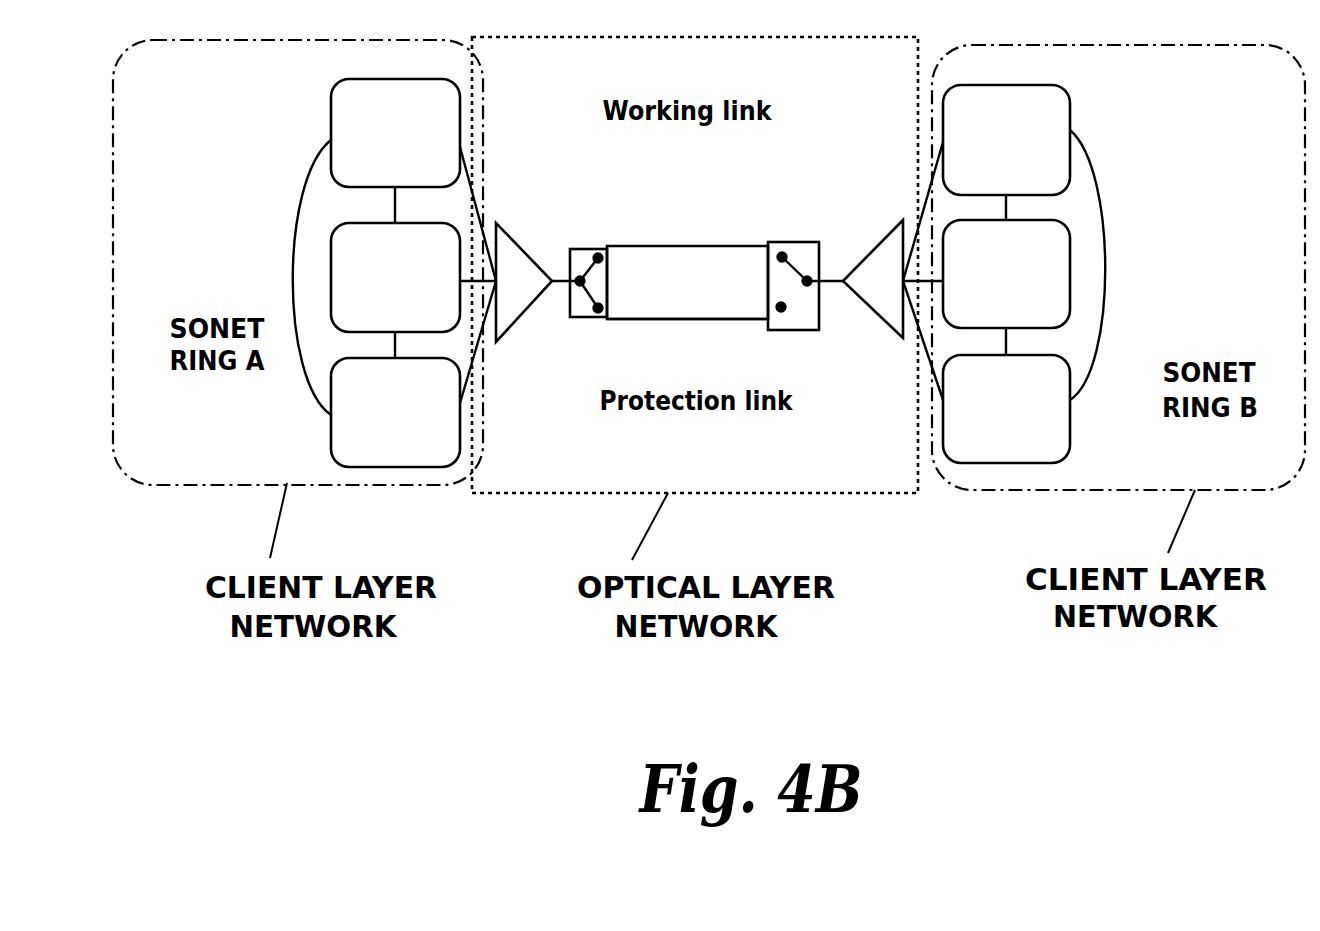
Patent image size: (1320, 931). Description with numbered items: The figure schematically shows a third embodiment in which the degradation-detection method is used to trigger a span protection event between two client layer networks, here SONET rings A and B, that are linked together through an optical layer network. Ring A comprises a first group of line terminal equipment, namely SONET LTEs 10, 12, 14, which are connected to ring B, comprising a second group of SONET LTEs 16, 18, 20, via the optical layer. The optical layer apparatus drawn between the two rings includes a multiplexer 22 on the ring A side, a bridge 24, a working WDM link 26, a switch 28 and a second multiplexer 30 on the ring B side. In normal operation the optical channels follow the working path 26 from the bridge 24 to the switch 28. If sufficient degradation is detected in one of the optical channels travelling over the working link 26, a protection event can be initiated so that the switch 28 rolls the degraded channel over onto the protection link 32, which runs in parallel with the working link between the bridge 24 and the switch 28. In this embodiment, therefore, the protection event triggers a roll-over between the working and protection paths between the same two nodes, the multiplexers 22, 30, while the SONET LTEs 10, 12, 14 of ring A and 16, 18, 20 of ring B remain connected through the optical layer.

The line terminal equipment 10 is at (331, 112).
The line terminal equipment 12 is at (331, 258).
The line terminal equipment 14 is at (331, 430).
The line terminal equipment 16 is at (1070, 110).
The line terminal equipment 18 is at (1070, 272).
The line terminal equipment 20 is at (1035, 462).
The multiplexer 22 is at (518, 245).
The bridge 24 is at (580, 249).
The working WDM link 26 is at (694, 246).
The switch 28 is at (790, 242).
The multiplexer 30 is at (878, 242).
The protection link 32 is at (705, 319).